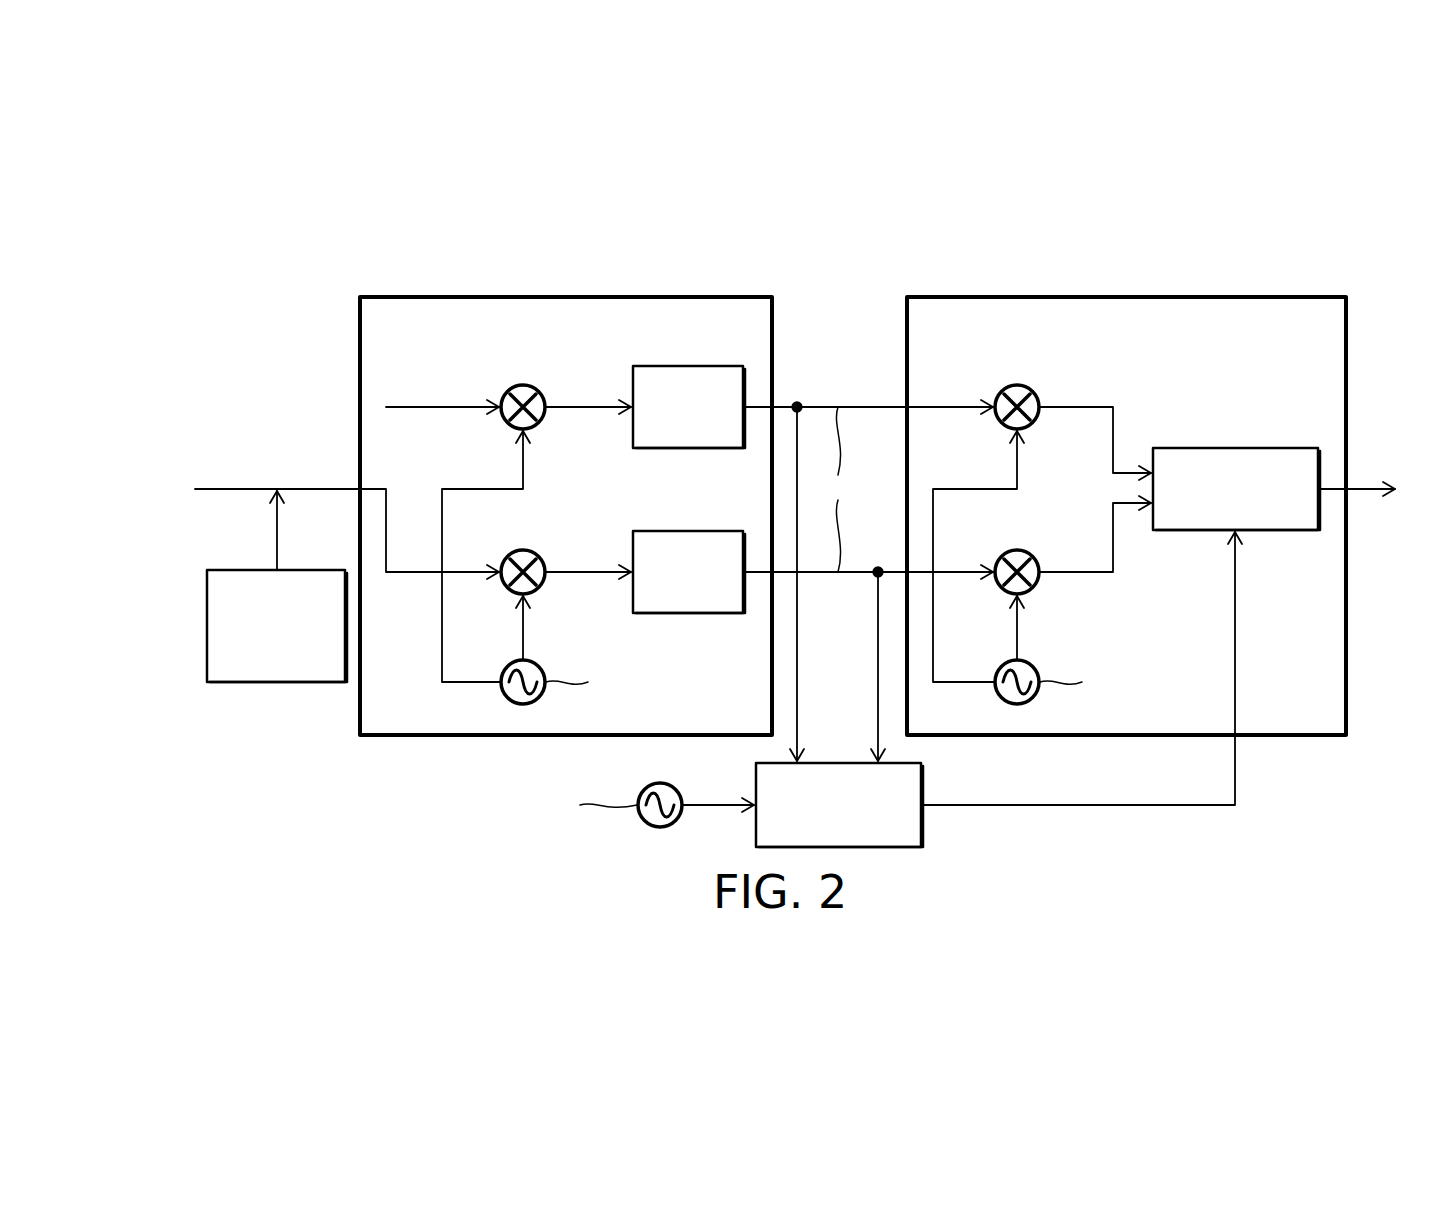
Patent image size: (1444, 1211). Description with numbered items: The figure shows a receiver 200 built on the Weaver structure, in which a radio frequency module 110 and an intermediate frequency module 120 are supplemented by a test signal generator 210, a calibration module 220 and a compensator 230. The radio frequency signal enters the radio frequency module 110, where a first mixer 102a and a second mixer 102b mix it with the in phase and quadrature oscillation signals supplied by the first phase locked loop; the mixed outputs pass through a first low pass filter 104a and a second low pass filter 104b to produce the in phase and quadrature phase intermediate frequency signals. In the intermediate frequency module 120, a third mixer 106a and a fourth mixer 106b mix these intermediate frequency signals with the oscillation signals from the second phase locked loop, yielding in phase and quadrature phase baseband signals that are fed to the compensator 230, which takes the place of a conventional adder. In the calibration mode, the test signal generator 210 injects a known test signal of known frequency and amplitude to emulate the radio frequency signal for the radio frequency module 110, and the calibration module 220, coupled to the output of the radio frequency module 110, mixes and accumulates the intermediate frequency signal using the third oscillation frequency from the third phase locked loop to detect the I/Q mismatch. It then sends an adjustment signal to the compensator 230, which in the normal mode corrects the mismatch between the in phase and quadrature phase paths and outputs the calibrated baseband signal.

The receiver 200 is at (1433, 283).
The radio frequency module 110 is at (360, 378).
The intermediate frequency module 120 is at (1346, 378).
The first mixer 102a is at (526, 388).
The second mixer 102b is at (526, 553).
The first low pass filter 104a is at (662, 366).
The second low pass filter 104b is at (662, 531).
The third mixer 106a is at (1020, 388).
The fourth mixer 106b is at (1020, 553).
The compensator 230 is at (1205, 448).
The test signal generator 210 is at (207, 626).
The calibration module 220 is at (840, 763).